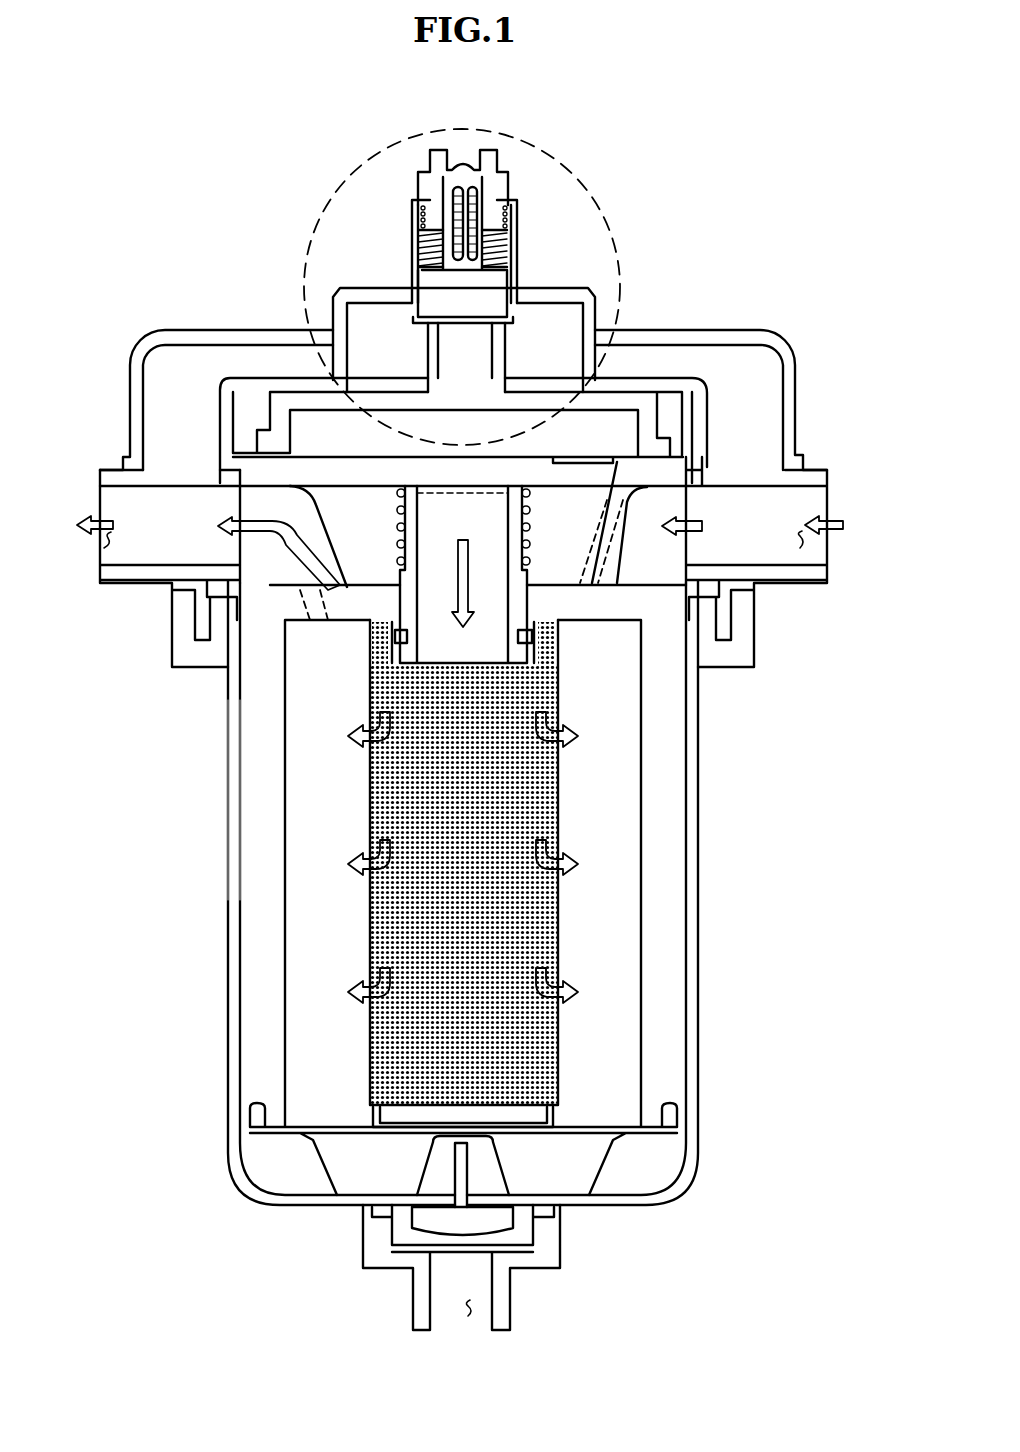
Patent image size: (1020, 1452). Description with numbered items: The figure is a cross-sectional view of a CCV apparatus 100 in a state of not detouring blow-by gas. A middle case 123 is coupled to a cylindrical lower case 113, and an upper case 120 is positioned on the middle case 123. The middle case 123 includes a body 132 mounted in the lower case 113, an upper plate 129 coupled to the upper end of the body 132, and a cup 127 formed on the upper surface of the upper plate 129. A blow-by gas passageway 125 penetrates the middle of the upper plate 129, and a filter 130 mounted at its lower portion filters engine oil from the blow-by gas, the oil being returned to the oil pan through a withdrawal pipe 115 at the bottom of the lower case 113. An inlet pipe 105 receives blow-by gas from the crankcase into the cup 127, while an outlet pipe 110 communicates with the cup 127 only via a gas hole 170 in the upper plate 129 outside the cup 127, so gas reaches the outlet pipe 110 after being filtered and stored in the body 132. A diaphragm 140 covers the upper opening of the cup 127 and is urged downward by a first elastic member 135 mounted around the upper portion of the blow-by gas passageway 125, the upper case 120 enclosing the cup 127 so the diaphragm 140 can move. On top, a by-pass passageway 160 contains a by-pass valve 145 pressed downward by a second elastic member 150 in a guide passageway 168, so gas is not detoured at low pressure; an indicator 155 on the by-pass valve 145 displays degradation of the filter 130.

The CCV apparatus 100 is at (612, 168).
The inlet pipe 105 is at (805, 543).
The outlet pipe 110 is at (112, 552).
The lower case 113 is at (700, 933).
The withdrawal pipe 115 is at (472, 1310).
The upper case 120 is at (652, 430).
The middle case 123 is at (237, 800).
The blow-by gas passageway 125 is at (556, 650).
The cup 127 is at (252, 463).
The upper plate 129 is at (282, 597).
The filter 130 is at (556, 797).
The body 132 is at (256, 899).
The first elastic member 135 is at (530, 535).
The diaphragm 140 is at (600, 400).
The by-pass valve 145 is at (497, 290).
The second elastic member 150 is at (482, 225).
The indicator 155 is at (447, 170).
The by-pass passageway 160 is at (378, 278).
The guide passageway 168 is at (517, 213).
The gas hole 170 is at (318, 628).